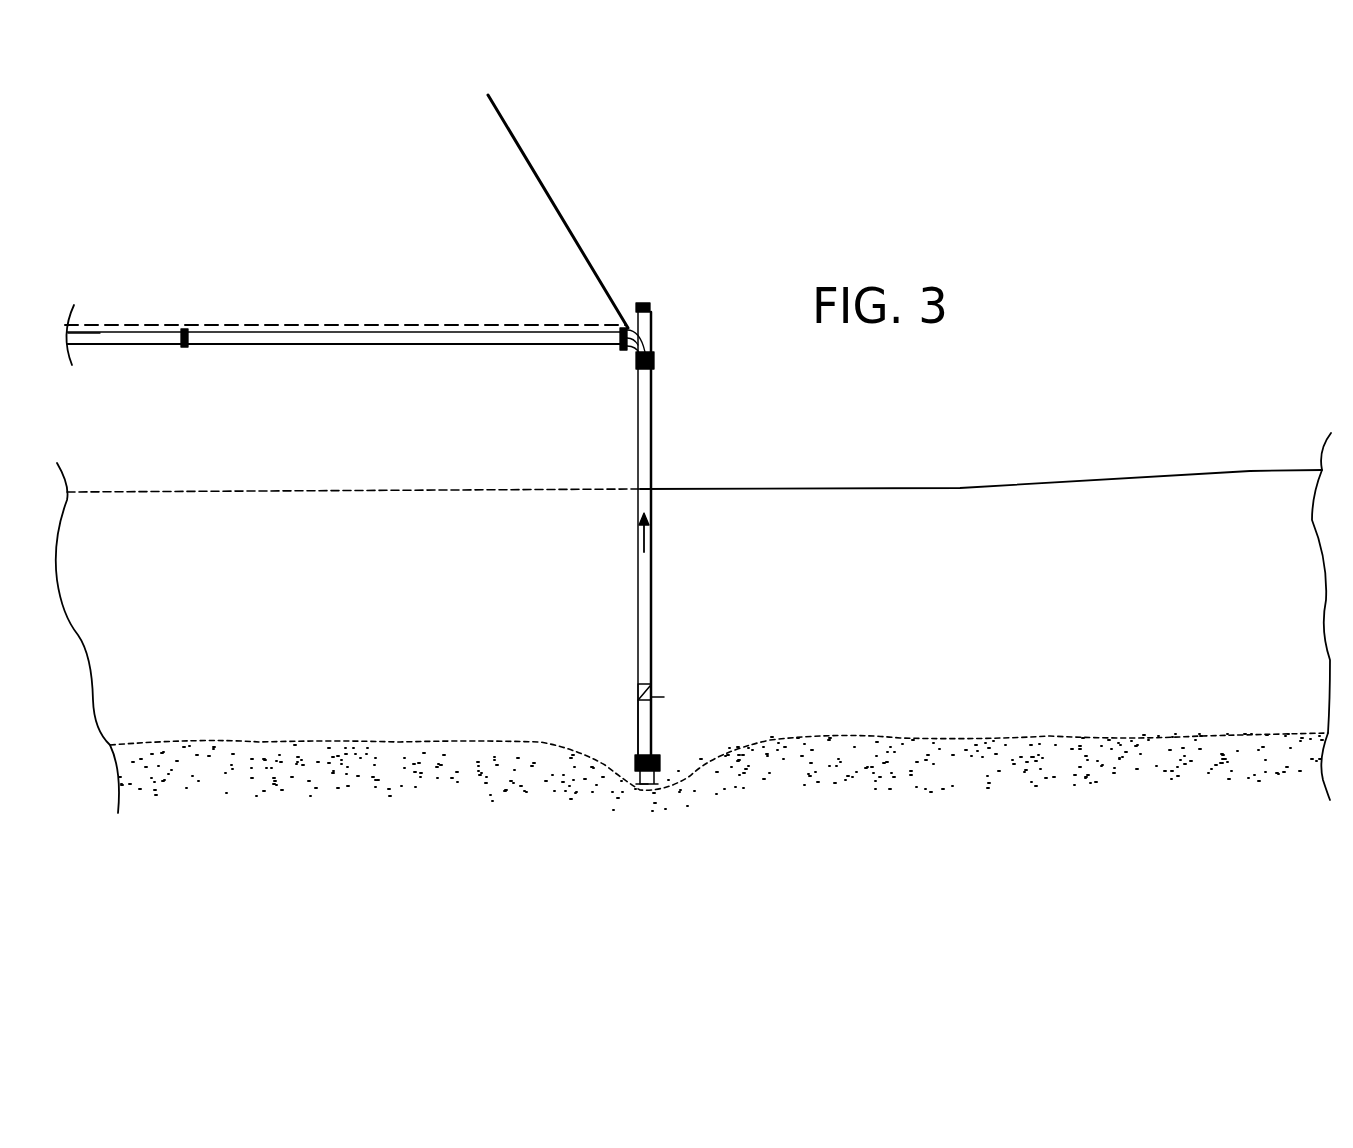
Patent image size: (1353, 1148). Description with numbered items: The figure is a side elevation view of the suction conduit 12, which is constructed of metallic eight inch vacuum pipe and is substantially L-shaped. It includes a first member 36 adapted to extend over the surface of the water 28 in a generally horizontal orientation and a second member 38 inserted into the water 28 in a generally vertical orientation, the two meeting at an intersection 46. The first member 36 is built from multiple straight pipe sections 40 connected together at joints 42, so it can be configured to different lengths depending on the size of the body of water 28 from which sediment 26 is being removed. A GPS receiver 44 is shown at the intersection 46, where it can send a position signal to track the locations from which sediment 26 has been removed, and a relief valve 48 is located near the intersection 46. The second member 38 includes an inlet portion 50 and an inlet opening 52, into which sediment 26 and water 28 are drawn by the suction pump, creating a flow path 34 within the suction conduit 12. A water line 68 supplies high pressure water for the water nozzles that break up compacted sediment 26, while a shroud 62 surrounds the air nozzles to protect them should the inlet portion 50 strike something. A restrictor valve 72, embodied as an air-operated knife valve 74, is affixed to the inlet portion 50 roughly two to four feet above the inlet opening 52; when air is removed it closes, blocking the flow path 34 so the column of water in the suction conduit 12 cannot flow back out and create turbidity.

The suction conduit 12 is at (160, 357).
The sediment 26 is at (1012, 760).
The water 28 is at (1172, 505).
The flow path 34 is at (653, 528).
The first member 36 is at (290, 350).
The second member 38 is at (660, 416).
The straight pipe sections 40 is at (100, 337).
The joints 42 is at (187, 330).
The GPS receiver 44 is at (646, 305).
The intersection 46 is at (628, 352).
The relief valve 48 is at (665, 347).
The inlet portion 50 is at (634, 740).
The inlet opening 52 is at (643, 800).
The shroud 62 is at (626, 755).
The water line 68 is at (412, 327).
The restrictor valve 72 is at (672, 688).
The knife valve 74 is at (664, 697).